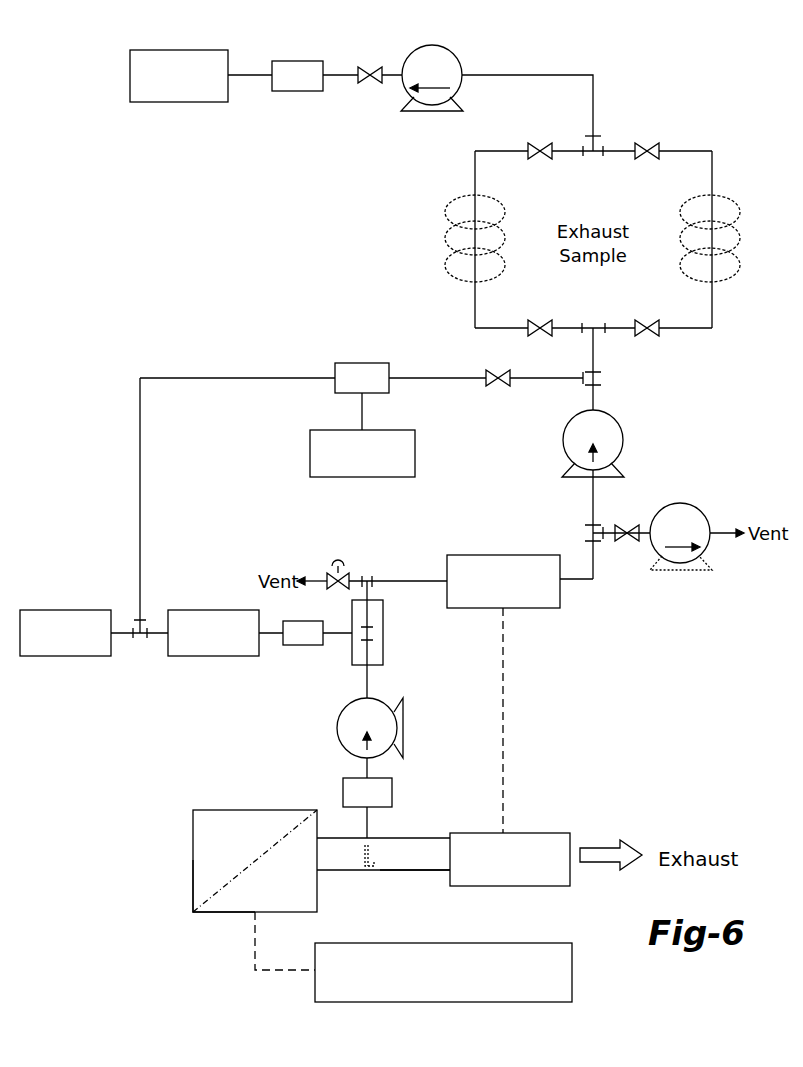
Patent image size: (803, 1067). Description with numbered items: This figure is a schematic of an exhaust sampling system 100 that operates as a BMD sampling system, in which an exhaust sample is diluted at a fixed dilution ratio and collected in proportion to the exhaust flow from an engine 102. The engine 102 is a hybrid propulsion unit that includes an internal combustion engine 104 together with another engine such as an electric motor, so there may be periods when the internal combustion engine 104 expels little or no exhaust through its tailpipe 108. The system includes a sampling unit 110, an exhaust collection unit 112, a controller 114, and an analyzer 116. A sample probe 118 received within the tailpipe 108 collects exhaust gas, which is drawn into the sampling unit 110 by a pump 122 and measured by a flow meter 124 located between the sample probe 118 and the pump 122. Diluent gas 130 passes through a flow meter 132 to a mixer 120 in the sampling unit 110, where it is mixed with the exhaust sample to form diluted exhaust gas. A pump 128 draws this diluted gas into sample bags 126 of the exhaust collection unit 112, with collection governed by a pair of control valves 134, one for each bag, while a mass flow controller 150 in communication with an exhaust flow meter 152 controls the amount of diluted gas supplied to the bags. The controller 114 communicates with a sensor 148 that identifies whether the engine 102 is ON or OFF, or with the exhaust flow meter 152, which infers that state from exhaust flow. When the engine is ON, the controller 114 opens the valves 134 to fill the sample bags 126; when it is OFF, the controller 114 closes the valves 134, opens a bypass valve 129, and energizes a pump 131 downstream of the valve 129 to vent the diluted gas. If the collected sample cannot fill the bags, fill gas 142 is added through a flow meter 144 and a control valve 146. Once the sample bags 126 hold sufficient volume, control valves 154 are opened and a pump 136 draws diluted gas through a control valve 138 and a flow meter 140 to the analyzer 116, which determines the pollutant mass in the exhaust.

The exhaust sampling system 100 is at (147, 212).
The engine 102 is at (177, 866).
The internal combustion engine 104 is at (216, 912).
The tailpipe 108 is at (432, 871).
The sampling unit 110 is at (385, 650).
The exhaust collection unit 112 is at (722, 157).
The controller 114 is at (310, 455).
The analyzer 116 is at (188, 50).
The sample probe 118 is at (368, 871).
The mixer 120 is at (370, 634).
The pump 122 is at (400, 725).
The flow meter 124 is at (392, 795).
The sample bags 126 is at (458, 226).
The pump 128 is at (625, 439).
The bypass valve 129 is at (622, 524).
The diluent gas 130 is at (214, 610).
The pump 131 is at (700, 512).
The flow meter 132 is at (303, 646).
The control valves 134 is at (530, 327).
The pump 136 is at (432, 45).
The control valve 138 is at (370, 70).
The flow meter 140 is at (298, 61).
The fill gas 142 is at (65, 610).
The flow meter 144 is at (350, 363).
The control valve 146 is at (498, 385).
The sensor 148 is at (443, 1002).
The mass flow controller 150 is at (500, 555).
The exhaust flow meter 152 is at (530, 833).
The control valves 154 is at (534, 150).